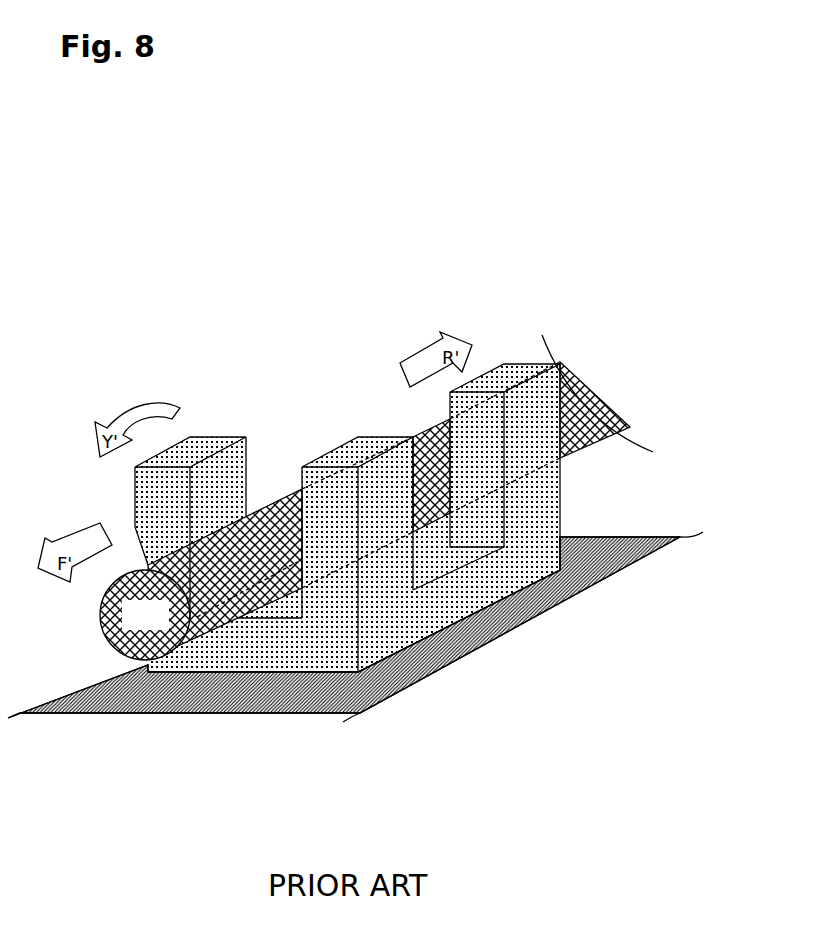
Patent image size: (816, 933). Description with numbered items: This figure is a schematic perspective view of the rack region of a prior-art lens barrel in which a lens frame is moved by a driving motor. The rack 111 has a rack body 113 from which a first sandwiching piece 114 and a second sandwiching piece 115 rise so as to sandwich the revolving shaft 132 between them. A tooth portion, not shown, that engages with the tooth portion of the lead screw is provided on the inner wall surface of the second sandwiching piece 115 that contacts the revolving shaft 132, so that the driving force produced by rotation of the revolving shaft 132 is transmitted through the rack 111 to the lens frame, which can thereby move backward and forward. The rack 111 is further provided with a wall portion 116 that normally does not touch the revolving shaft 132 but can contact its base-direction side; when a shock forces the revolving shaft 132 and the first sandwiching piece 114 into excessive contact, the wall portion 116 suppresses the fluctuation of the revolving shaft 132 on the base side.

The rack 111 is at (595, 502).
The rack body 113 is at (255, 648).
The first sandwiching piece 114 is at (203, 449).
The second sandwiching piece 115 is at (356, 452).
The wall portion 116 is at (497, 375).
The revolving shaft 132 is at (145, 615).